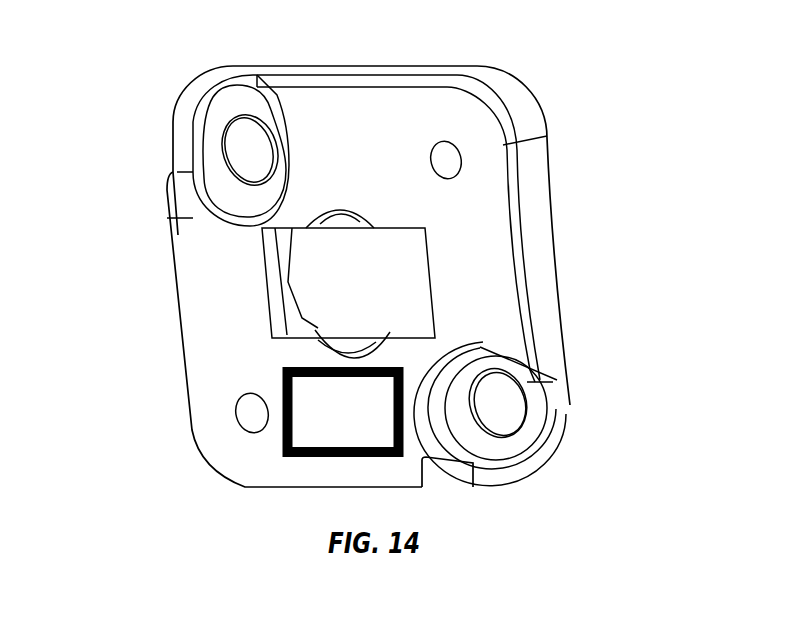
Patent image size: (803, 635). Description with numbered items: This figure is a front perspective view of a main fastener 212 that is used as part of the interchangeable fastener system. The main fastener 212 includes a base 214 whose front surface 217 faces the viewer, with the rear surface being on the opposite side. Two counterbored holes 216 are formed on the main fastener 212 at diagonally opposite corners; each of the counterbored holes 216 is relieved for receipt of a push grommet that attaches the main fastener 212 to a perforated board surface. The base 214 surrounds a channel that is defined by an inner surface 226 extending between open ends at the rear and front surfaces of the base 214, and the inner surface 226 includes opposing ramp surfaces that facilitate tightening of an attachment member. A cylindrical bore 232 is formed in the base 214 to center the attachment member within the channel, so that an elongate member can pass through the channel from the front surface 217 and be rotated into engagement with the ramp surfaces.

The main fastener 212 is at (577, 105).
The base 214 is at (554, 210).
The counterbored holes 216 is at (205, 122).
The front surface 217 is at (497, 300).
The inner surface 226 is at (380, 288).
The cylindrical bore 232 is at (340, 215).